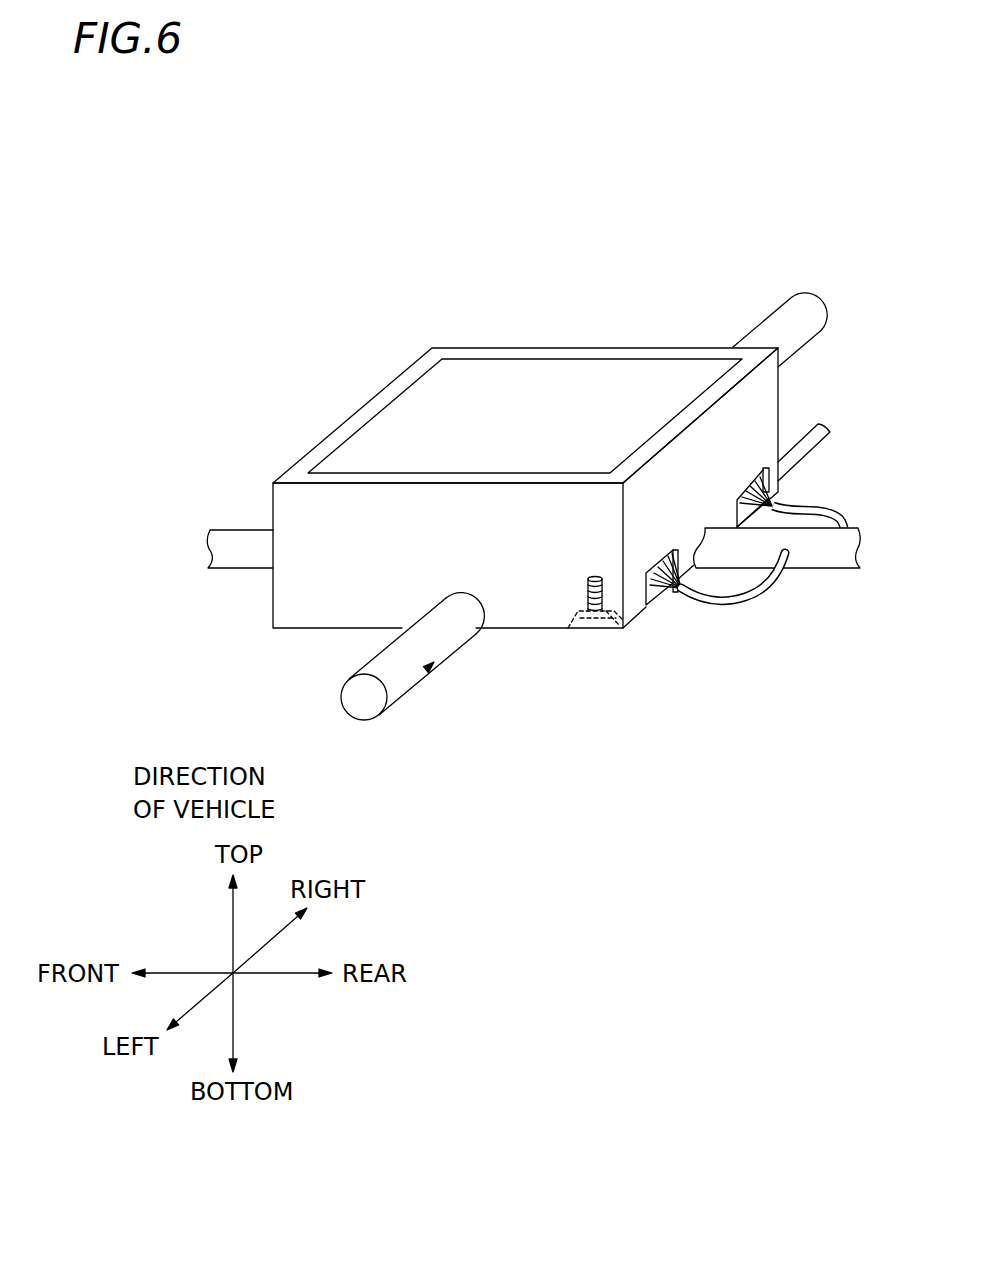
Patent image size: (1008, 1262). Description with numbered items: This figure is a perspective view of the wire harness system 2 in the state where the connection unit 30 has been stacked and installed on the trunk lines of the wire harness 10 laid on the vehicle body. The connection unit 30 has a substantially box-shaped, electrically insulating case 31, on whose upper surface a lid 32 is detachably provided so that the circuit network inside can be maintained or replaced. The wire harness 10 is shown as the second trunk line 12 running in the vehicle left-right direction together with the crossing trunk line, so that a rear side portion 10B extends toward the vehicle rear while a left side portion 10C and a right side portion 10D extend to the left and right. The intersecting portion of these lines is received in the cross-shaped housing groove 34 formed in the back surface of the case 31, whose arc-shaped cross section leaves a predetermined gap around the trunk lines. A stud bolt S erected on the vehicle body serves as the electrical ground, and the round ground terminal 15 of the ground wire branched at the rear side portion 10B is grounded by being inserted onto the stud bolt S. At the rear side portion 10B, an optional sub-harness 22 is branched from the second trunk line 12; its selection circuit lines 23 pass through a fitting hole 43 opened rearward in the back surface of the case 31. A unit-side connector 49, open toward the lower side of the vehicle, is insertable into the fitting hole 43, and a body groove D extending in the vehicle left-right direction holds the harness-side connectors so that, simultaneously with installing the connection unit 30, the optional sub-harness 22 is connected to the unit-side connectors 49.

The wire harness system 2 is at (297, 157).
The wire harness 10 is at (230, 532).
The rear side portion 10B is at (820, 560).
The left side portion 10C is at (445, 642).
The right side portion 10D is at (775, 318).
The second trunk line 12 is at (398, 684).
The ground terminal 15 is at (577, 629).
The stud bolt S is at (615, 630).
The optional sub-harness 22 is at (737, 604).
The selection circuit lines 23 is at (665, 590).
The connection unit 30 is at (542, 330).
The case 31 is at (585, 347).
The lid 32 is at (448, 388).
The housing groove 34 is at (473, 633).
The fitting hole 43 is at (771, 482).
The unit-side connector 49 is at (775, 492).
The body groove D is at (802, 443).